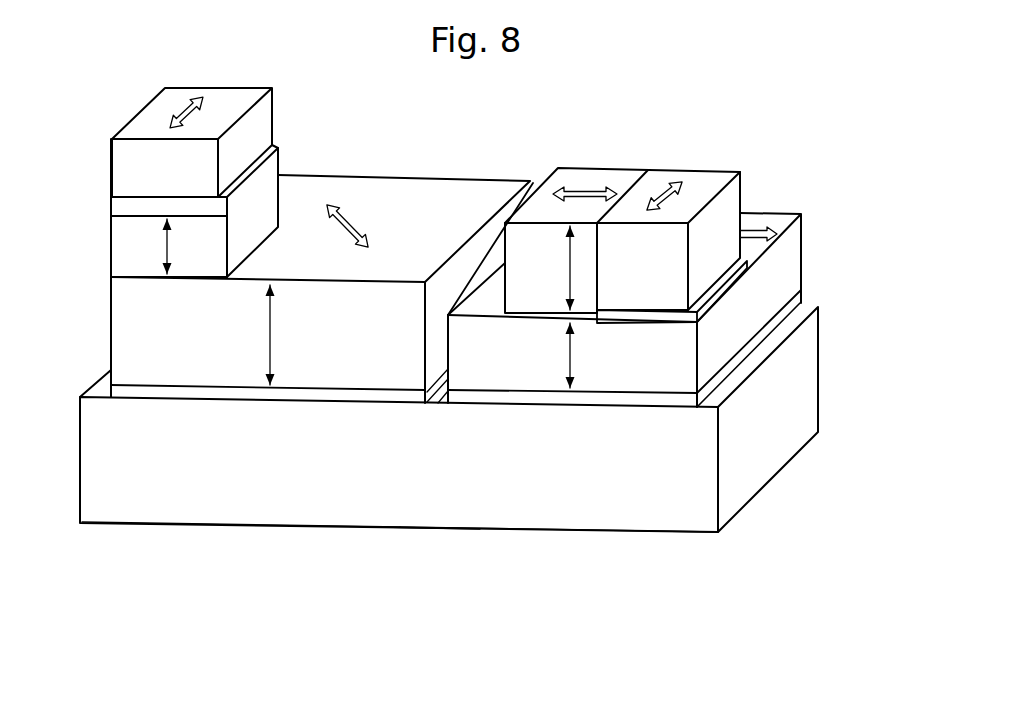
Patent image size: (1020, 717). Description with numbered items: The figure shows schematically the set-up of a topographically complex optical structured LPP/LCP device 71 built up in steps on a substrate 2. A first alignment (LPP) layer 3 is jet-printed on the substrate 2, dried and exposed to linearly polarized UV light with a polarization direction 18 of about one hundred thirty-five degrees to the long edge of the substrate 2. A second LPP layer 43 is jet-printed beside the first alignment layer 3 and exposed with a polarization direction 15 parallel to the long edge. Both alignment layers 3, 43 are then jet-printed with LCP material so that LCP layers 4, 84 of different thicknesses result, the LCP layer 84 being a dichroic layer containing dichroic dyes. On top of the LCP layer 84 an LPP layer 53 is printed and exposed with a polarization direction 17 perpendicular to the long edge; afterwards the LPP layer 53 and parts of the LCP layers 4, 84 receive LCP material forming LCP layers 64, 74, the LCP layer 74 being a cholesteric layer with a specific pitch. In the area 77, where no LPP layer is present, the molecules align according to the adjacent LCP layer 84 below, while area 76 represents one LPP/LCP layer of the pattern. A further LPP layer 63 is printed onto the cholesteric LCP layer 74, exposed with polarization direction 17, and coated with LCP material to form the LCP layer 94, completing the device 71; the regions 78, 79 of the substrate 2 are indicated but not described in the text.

The substrate 2 is at (487, 473).
The first alignment (LPP) layer 3 is at (150, 388).
The LCP layer 4 is at (292, 244).
The polarization direction 15 is at (580, 197).
The polarization direction 17 is at (185, 110).
The polarization direction 18 is at (348, 217).
The second LPP layer 43 is at (747, 353).
The LPP layer 53 is at (720, 298).
The LPP layer 63 is at (133, 203).
The LCP layer 64 is at (622, 199).
The optical structured LPP/LCP device 71 is at (430, 545).
The cholesteric LCP layer 74 is at (132, 250).
The LPP/LCP layer 76 is at (418, 158).
The LPP/LCP layer area 77 is at (618, 158).
The first region 78 is at (322, 422).
The second region 79 is at (532, 427).
The dichroic LCP layer 84 is at (657, 265).
The LCP layer 94 is at (137, 167).